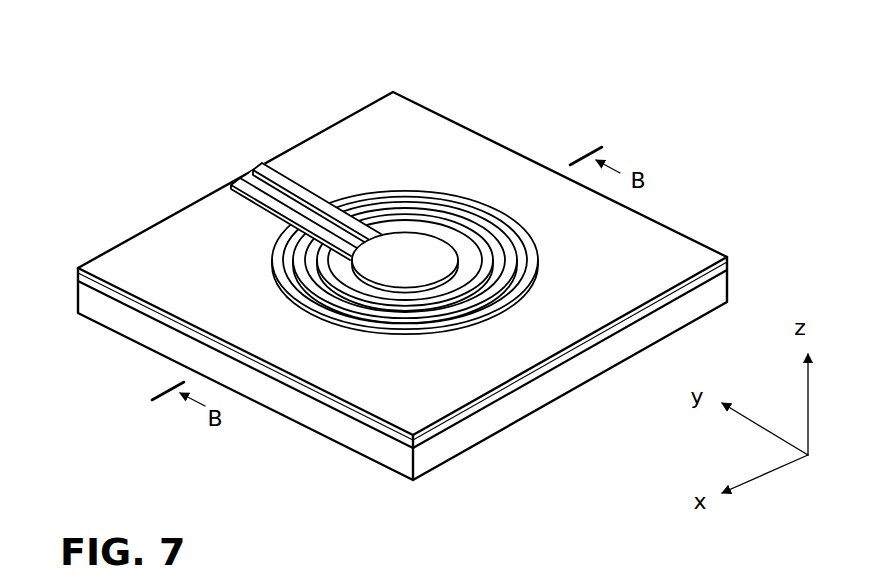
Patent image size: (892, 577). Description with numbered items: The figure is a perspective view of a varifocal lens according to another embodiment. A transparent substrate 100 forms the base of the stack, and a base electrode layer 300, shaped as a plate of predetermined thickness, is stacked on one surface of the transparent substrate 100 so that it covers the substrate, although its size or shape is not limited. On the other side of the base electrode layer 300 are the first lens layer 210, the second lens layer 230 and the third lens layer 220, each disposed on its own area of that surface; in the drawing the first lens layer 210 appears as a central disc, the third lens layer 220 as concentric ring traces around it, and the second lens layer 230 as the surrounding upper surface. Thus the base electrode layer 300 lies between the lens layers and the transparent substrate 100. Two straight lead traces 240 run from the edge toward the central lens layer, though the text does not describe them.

The transparent substrate 100 is at (513, 412).
The first lens layer 210 is at (403, 258).
The third lens layer 220 is at (468, 235).
The second lens layer 230 is at (652, 250).
The lead lines 240 is at (363, 205).
The base electrode layer 300 is at (463, 417).